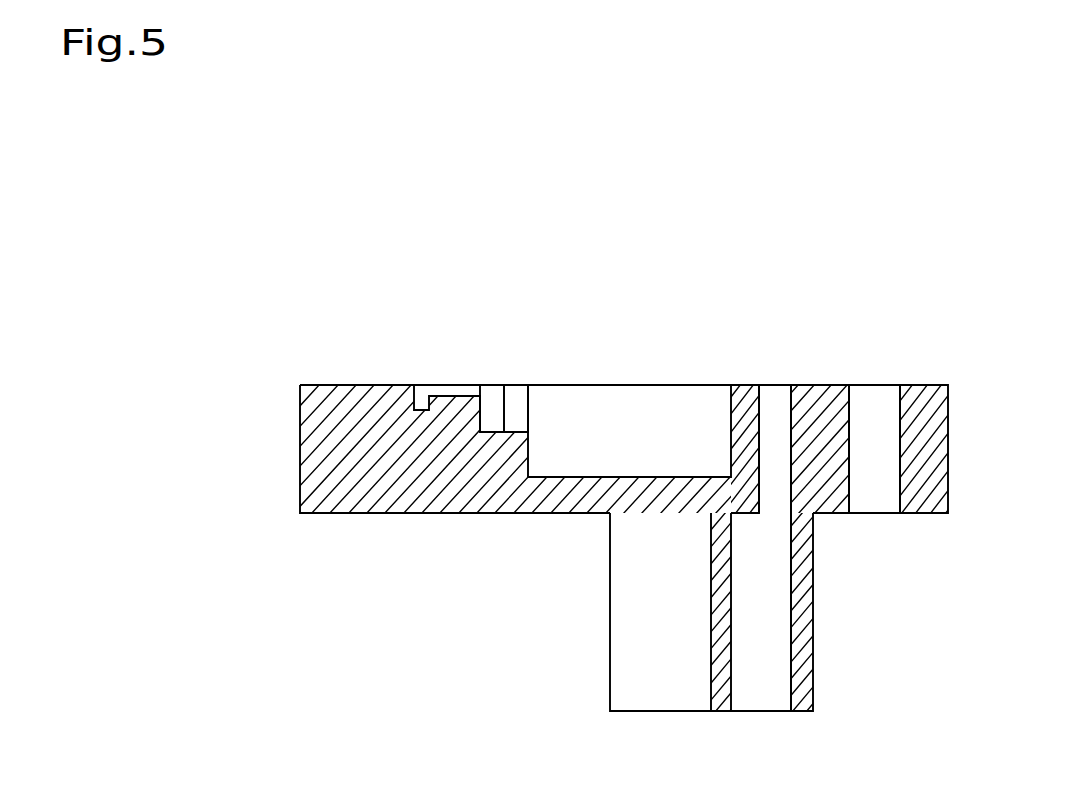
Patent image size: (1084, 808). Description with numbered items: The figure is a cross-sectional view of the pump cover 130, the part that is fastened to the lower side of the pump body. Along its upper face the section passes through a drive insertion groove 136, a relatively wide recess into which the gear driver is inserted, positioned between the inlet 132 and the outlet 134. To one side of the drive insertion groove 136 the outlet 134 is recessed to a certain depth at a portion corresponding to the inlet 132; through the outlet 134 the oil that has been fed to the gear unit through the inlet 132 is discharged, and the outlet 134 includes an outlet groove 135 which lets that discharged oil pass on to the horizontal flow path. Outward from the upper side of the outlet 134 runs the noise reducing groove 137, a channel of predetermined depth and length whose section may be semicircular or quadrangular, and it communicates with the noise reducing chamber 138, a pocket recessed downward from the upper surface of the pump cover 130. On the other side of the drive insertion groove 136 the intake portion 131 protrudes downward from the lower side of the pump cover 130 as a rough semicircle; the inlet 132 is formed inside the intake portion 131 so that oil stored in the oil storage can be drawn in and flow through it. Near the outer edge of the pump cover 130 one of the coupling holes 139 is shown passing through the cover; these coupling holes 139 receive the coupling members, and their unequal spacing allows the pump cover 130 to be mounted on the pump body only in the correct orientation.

The pump cover 130 is at (214, 369).
The intake portion 131 is at (813, 612).
The inlet 132 is at (773, 393).
The outlet 134 is at (490, 380).
The outlet groove 135 is at (517, 380).
The drive insertion groove 136 is at (621, 412).
The noise reducing groove 137 is at (472, 380).
The noise reducing chamber 138 is at (420, 380).
The coupling holes 139 is at (872, 393).